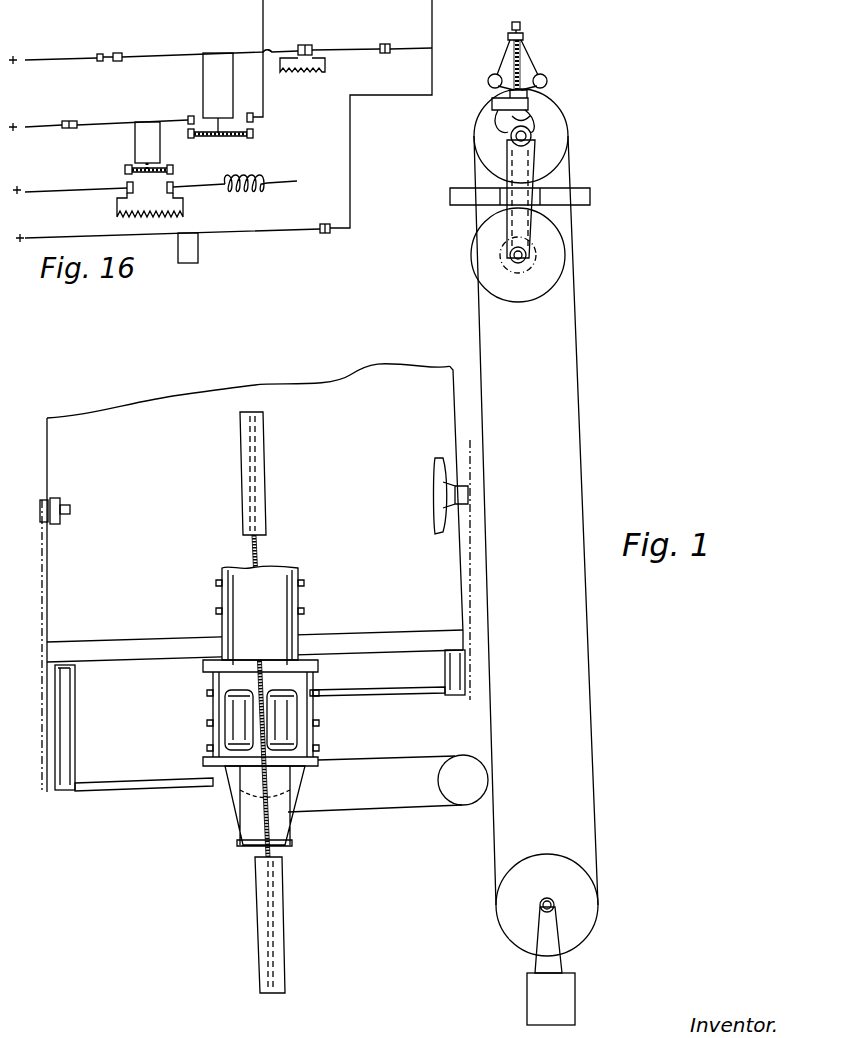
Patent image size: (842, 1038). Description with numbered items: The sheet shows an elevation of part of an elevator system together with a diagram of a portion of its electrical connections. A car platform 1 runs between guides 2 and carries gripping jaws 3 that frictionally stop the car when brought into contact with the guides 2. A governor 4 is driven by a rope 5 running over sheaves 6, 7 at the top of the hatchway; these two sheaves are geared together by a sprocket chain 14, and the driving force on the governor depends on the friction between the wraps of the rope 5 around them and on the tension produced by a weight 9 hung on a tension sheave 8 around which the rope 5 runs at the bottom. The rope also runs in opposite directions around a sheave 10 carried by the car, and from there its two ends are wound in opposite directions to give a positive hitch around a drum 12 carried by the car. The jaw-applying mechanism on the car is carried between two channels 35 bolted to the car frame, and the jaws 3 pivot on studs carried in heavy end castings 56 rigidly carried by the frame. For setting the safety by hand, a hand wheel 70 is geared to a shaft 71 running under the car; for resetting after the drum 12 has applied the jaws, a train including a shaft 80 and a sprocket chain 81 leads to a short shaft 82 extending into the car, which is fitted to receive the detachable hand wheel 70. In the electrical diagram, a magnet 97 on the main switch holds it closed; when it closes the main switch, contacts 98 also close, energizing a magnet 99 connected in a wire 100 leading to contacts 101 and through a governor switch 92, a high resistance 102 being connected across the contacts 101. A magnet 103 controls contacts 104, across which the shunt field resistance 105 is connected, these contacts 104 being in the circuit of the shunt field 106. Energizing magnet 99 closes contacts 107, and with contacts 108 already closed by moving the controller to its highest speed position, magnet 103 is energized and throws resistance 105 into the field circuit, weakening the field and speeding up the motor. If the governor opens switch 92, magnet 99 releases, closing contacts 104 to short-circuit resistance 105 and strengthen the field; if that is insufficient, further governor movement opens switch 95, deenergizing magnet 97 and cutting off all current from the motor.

In FIG. 1, the car platform 1 is at (122, 652).
In FIG. 1, the guides 2 is at (272, 900).
In FIG. 1, the gripping jaws 3 is at (284, 730).
In FIG. 1, the governor 4 is at (530, 52).
In FIG. 1, the rope 5 is at (578, 290).
In FIG. 1, the sheave 6 is at (548, 128).
In FIG. 1, the sheave 7 is at (518, 255).
In FIG. 1, the tension sheave 8 is at (547, 905).
In FIG. 1, the weight 9 is at (551, 966).
In FIG. 1, the sheave 10 is at (388, 783).
In FIG. 1, the drum 12 is at (245, 815).
In FIG. 1, the sprocket chain 14 is at (532, 238).
In FIG. 1, the channels 35 is at (320, 746).
In FIG. 1, the end castings 56 is at (268, 632).
In FIG. 1, the hand wheel 70 is at (433, 478).
In FIG. 1, the shaft 71 is at (387, 673).
In FIG. 1, the shaft 80 is at (144, 776).
In FIG. 1, the sprocket chain 81 is at (50, 728).
In FIG. 1, the short shaft 82 is at (70, 509).
In FIG. 16, the governor switch 92 is at (385, 38).
In FIG. 16, the switch 95 is at (325, 218).
In FIG. 16, the main switch magnet 97 is at (189, 248).
In FIG. 16, the contacts 98 is at (109, 46).
In FIG. 16, the magnet 99 is at (218, 93).
In FIG. 16, the wire 100 is at (276, 52).
In FIG. 16, the contacts 101 is at (312, 46).
In FIG. 16, the high resistance 102 is at (302, 74).
In FIG. 16, the magnet 103 is at (149, 148).
In FIG. 16, the contacts 104 is at (158, 183).
In FIG. 16, the shunt field resistance 105 is at (150, 214).
In FIG. 16, the shunt field 106 is at (260, 174).
In FIG. 16, the contacts 107 is at (186, 138).
In FIG. 16, the contacts 108 is at (74, 114).